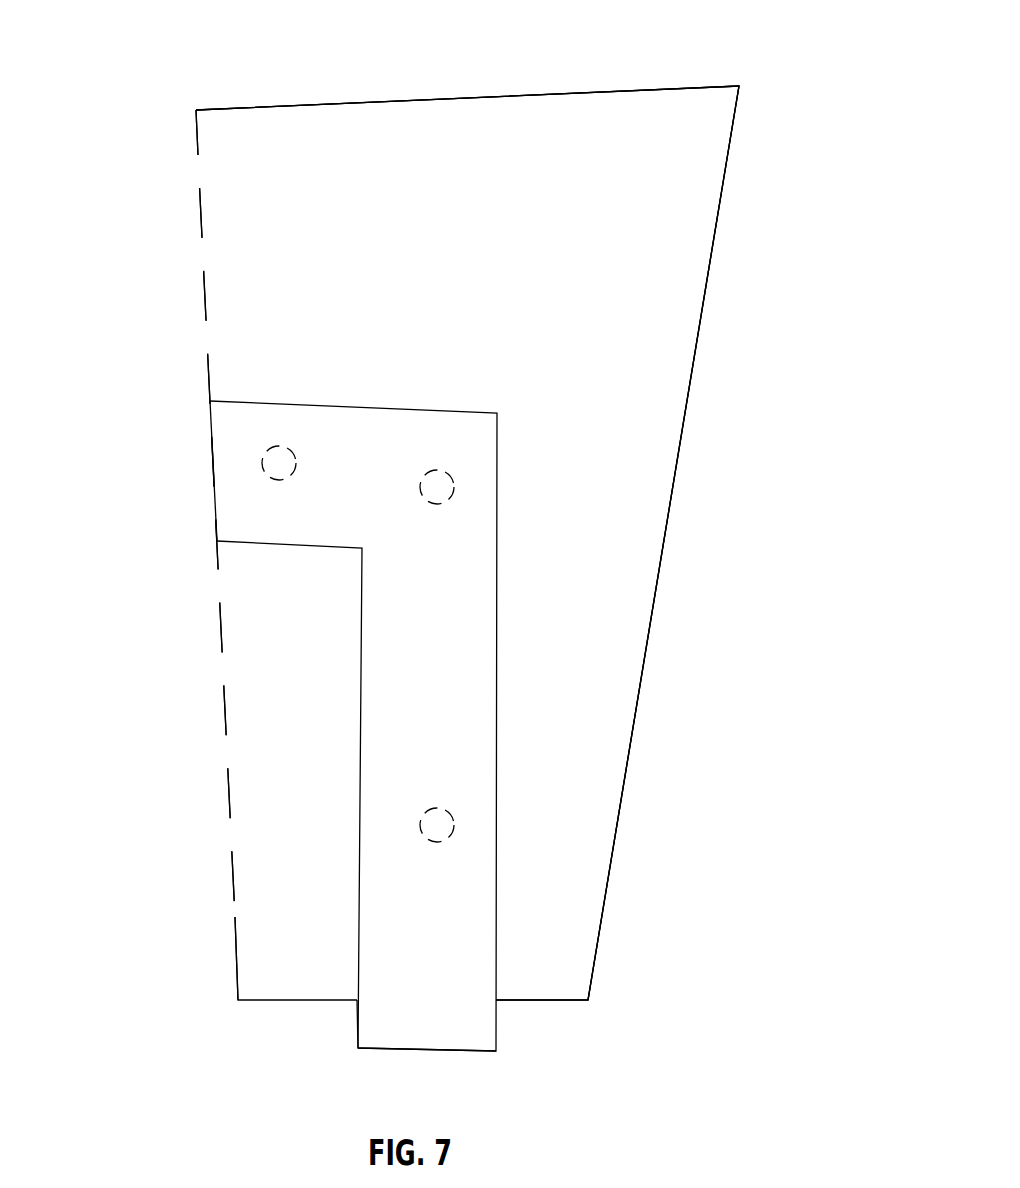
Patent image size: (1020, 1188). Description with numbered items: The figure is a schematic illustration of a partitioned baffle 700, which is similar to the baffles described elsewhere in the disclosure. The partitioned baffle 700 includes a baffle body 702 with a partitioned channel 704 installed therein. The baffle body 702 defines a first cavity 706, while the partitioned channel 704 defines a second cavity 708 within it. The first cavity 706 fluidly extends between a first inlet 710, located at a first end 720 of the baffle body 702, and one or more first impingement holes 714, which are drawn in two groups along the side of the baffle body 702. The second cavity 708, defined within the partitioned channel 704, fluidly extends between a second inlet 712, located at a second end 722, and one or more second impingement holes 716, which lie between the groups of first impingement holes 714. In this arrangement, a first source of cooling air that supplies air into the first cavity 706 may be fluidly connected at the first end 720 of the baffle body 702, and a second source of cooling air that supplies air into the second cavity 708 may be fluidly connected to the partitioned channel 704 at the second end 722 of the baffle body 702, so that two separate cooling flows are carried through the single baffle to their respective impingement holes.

The partitioned baffle 700 is at (787, 43).
The baffle body 702 is at (696, 373).
The partitioned channel 704 is at (356, 1027).
The first cavity 706 is at (521, 281).
The second cavity 708 is at (453, 707).
The first inlet 710 is at (652, 84).
The second inlet 712 is at (434, 1060).
The first impingement holes 714 is at (180, 153).
The second impingement holes 716 is at (180, 398).
The first end 720 is at (124, 119).
The second end 722 is at (170, 981).